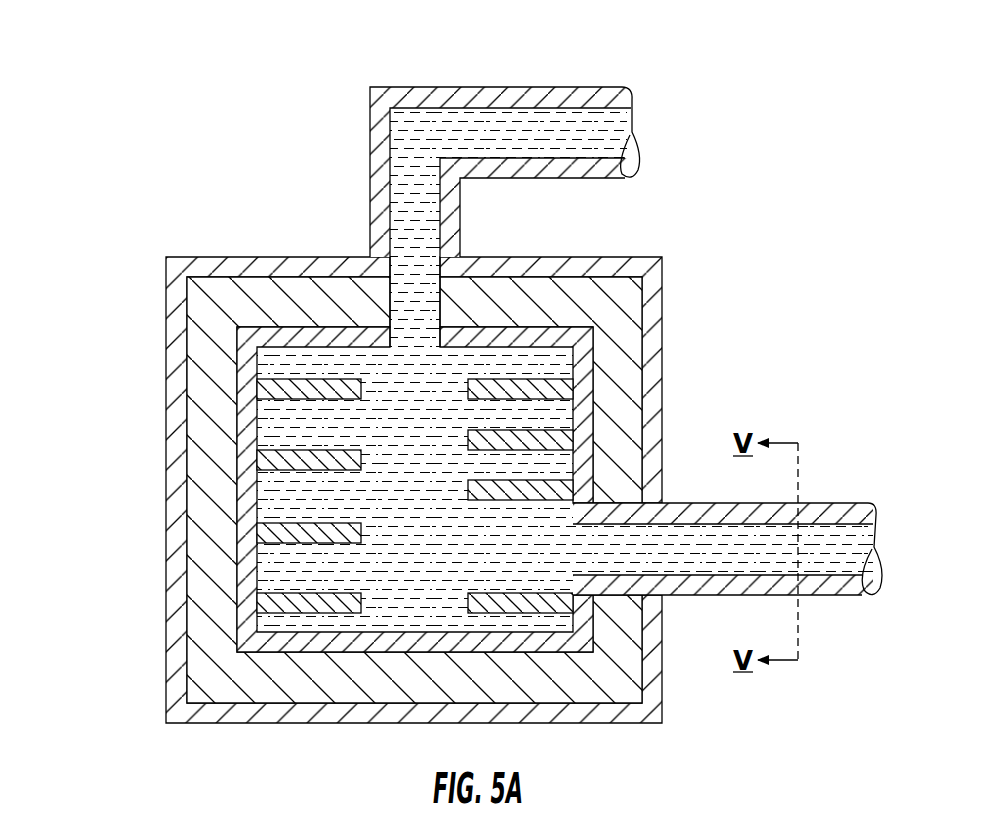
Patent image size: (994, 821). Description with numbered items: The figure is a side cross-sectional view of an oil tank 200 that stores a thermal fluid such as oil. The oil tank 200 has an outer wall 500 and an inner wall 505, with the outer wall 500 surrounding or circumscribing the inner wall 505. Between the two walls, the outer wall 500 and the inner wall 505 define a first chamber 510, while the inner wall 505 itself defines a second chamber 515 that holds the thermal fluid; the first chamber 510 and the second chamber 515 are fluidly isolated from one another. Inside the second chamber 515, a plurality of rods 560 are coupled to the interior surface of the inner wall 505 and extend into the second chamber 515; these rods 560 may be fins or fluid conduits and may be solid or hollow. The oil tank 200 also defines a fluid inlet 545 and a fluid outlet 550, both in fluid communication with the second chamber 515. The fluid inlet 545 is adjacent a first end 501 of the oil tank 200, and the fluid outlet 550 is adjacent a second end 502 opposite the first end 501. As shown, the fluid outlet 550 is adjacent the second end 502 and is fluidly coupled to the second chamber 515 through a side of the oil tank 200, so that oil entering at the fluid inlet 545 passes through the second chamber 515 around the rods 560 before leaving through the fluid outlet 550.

The oil tank 200 is at (117, 95).
The outer wall 500 is at (199, 270).
The first end 501 is at (388, 65).
The second end 502 is at (568, 748).
The inner wall 505 is at (250, 388).
The first chamber 510 is at (200, 437).
The second chamber 515 is at (388, 603).
The fluid inlet 545 is at (580, 97).
The fluid outlet 550 is at (833, 512).
The plurality of rods 560 is at (337, 383).